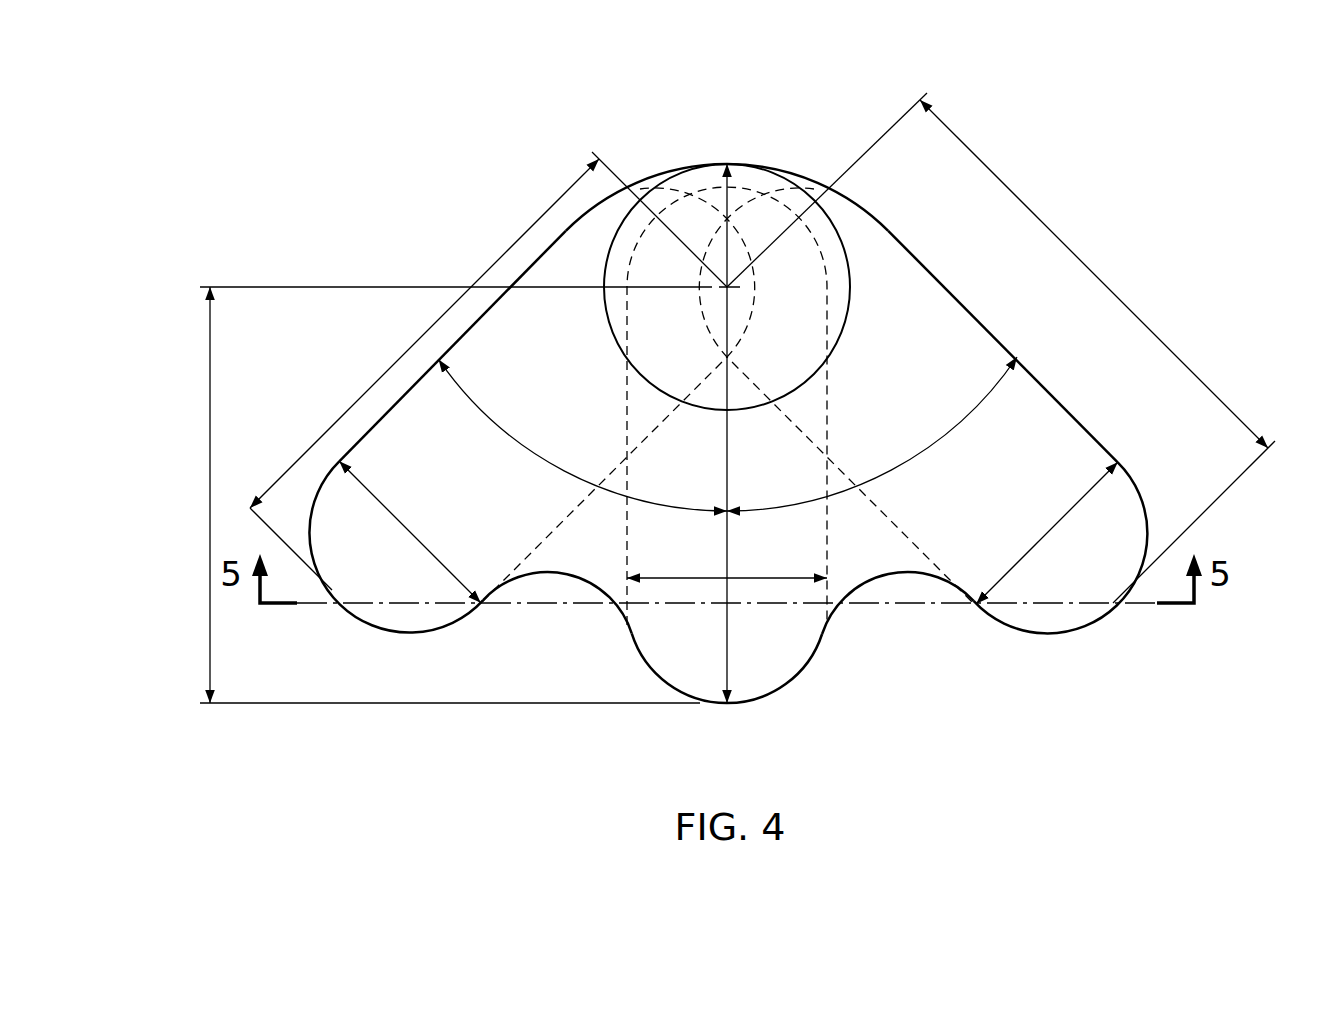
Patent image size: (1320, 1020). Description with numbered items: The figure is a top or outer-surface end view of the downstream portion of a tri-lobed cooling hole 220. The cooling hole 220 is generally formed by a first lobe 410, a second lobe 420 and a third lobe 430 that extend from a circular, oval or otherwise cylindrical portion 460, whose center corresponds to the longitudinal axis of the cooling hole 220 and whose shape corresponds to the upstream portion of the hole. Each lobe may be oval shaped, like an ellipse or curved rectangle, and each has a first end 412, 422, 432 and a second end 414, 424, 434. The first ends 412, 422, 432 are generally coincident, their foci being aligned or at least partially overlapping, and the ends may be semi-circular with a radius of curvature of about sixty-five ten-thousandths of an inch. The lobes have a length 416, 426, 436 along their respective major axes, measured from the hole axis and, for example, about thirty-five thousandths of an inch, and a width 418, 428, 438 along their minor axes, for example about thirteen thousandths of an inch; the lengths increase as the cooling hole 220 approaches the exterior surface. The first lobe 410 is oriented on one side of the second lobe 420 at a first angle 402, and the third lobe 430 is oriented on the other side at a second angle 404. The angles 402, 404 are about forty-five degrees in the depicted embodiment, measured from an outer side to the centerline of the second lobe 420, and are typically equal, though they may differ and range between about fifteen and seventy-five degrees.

The cooling hole 220 is at (439, 129).
The first angle 402 is at (556, 464).
The second angle 404 is at (905, 464).
The first lobe 410 is at (385, 411).
The first end of first lobe 412 is at (636, 184).
The second end of first lobe 414 is at (341, 610).
The length of first lobe 416 is at (420, 333).
The width of first lobe 418 is at (423, 531).
The second lobe 420 is at (608, 603).
The first end of second lobe 422 is at (718, 164).
The second end of second lobe 424 is at (712, 706).
The length of second lobe 426 is at (205, 498).
The width of second lobe 428 is at (694, 575).
The third lobe 430 is at (960, 302).
The first end of third lobe 432 is at (838, 184).
The second end of third lobe 434 is at (1113, 609).
The length of third lobe 436 is at (1121, 299).
The width of third lobe 438 is at (1029, 531).
The cylindrical portion 460 is at (606, 328).